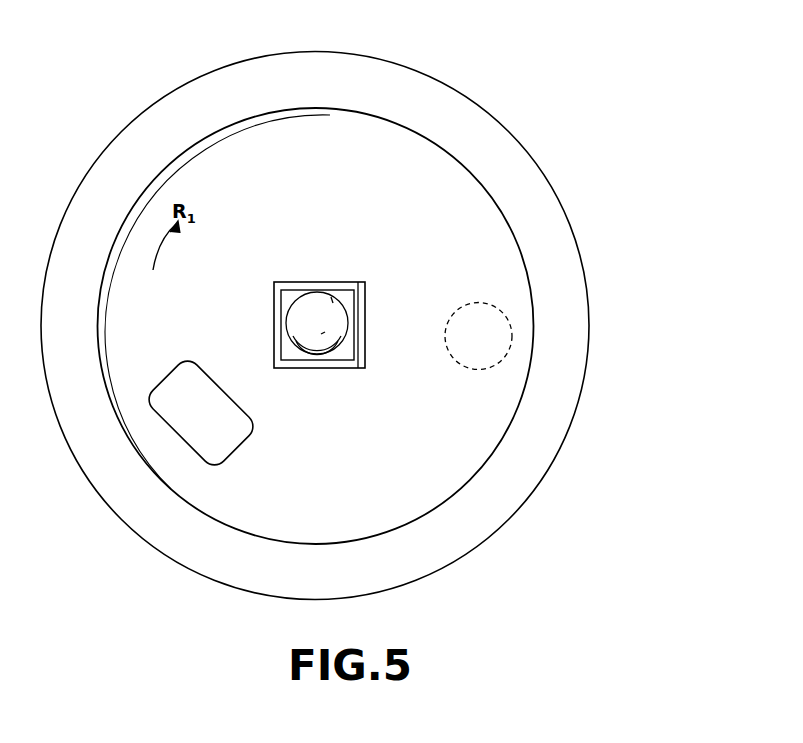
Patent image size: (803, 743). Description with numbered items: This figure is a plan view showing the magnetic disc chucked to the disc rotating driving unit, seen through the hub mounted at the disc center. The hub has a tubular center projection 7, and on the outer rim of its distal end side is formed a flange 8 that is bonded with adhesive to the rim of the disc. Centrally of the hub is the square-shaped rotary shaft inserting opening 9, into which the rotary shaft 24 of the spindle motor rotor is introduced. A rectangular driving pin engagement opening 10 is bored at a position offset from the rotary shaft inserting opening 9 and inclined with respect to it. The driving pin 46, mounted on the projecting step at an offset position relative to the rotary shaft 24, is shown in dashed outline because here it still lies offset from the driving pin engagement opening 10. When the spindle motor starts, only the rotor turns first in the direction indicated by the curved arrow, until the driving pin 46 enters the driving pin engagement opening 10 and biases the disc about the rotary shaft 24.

The center projection 7 is at (398, 167).
The flange 8 is at (550, 210).
The rotary shaft inserting opening 9 is at (297, 300).
The driving pin engagement opening 10 is at (250, 420).
The rotary shaft 24 is at (348, 281).
The driving pin 46 is at (508, 340).